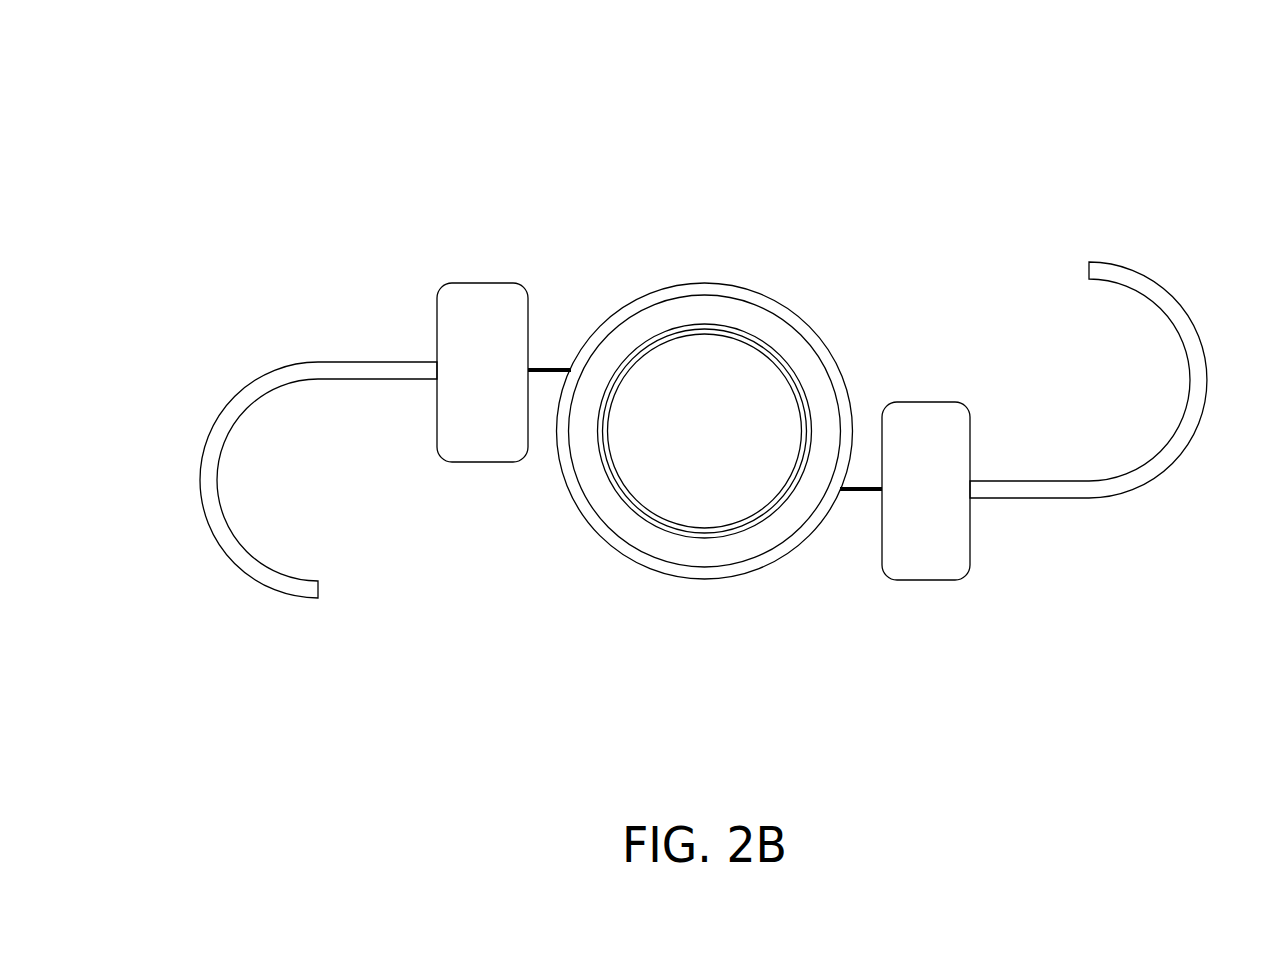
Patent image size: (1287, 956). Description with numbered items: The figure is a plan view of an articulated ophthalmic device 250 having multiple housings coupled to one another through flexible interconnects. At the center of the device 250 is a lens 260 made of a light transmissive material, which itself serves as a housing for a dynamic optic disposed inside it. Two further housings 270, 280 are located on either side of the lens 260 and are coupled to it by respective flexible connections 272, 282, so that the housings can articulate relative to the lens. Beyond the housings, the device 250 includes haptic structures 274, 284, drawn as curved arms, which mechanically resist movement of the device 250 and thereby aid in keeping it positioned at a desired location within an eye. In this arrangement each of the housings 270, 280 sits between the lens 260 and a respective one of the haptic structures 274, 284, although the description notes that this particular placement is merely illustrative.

The ophthalmic device 250 is at (337, 118).
The lens 260 is at (620, 527).
The housing 270 is at (451, 271).
The flexible connection 272 is at (549, 355).
The haptic structure 274 is at (282, 611).
The housing 280 is at (958, 595).
The flexible connection 282 is at (857, 510).
The haptic structure 284 is at (1137, 250).